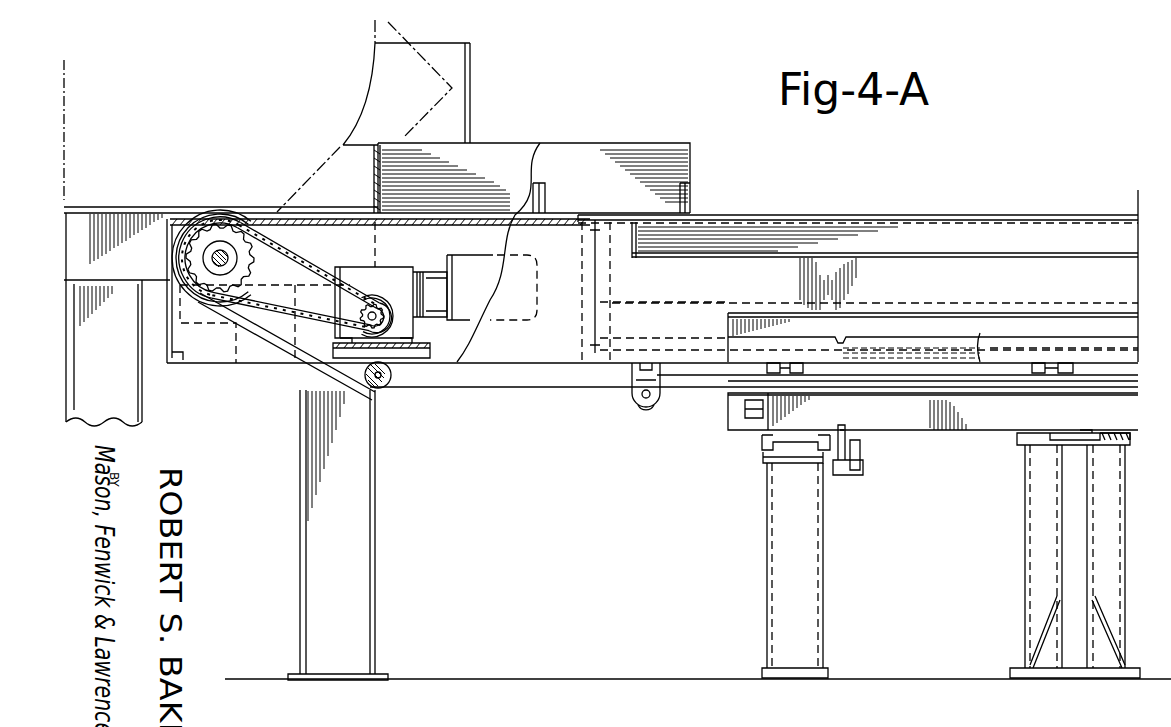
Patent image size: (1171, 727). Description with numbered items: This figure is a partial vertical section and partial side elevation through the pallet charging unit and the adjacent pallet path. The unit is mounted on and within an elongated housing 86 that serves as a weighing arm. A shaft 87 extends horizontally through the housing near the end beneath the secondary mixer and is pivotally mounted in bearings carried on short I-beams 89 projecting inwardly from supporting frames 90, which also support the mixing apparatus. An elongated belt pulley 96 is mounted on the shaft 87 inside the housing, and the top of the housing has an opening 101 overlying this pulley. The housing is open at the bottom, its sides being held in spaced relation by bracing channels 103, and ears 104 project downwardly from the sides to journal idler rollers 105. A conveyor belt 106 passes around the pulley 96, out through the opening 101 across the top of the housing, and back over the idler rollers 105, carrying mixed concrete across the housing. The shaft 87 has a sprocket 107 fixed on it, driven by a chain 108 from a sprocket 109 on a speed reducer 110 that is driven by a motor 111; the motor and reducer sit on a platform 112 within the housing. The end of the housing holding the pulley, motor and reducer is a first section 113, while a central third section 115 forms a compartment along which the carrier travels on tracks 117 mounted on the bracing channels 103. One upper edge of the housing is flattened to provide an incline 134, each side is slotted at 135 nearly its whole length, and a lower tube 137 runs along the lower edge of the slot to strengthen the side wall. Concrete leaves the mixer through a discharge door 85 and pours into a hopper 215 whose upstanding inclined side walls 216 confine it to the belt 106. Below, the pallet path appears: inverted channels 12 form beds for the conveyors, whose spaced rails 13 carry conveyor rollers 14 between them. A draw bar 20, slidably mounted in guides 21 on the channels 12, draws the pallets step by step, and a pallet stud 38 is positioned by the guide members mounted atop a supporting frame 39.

The inverted channel 12 is at (778, 478).
The rail 13 is at (765, 460).
The conveyor roller 14 is at (765, 445).
The draw bar 20 is at (848, 446).
The guide 21 is at (862, 462).
The stud 38 is at (1080, 432).
The supporting frame 39 is at (1025, 523).
The discharge door 85 is at (457, 78).
The housing 86 is at (979, 208).
The shaft 87 is at (203, 258).
The I-beam 89 is at (236, 364).
The supporting frame 90 is at (299, 464).
The belt pulley 96 is at (262, 262).
The opening 101 is at (195, 208).
The bracing channel 103 is at (765, 368).
The ear 104 is at (632, 393).
The idler roller 105 is at (400, 375).
The conveyor belt 106 is at (530, 388).
The sprocket 107 is at (247, 236).
The chain 108 is at (266, 256).
The sprocket 109 is at (368, 300).
The speed reducer 110 is at (402, 272).
The motor 111 is at (463, 262).
The platform 112 is at (432, 347).
The first housing section 113 is at (286, 206).
The third housing section 115 is at (830, 215).
The track 117 is at (893, 350).
The incline 134 is at (740, 222).
The slot 135 is at (1040, 323).
The lower tube 137 is at (996, 333).
The hopper 215 is at (518, 133).
The inclined side wall 216 is at (610, 165).